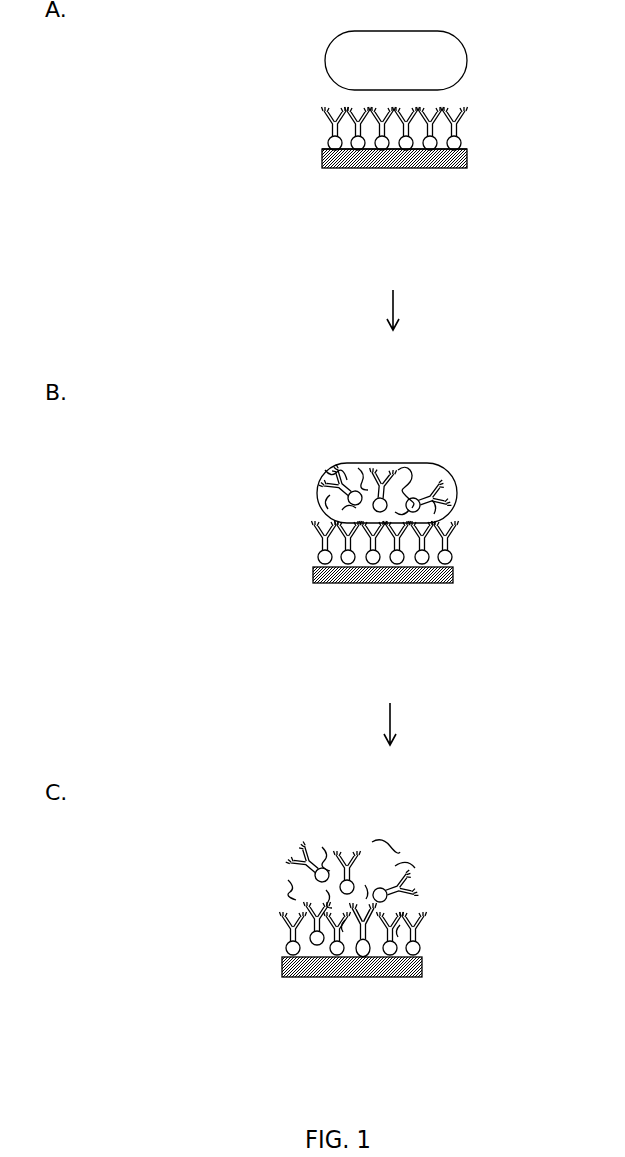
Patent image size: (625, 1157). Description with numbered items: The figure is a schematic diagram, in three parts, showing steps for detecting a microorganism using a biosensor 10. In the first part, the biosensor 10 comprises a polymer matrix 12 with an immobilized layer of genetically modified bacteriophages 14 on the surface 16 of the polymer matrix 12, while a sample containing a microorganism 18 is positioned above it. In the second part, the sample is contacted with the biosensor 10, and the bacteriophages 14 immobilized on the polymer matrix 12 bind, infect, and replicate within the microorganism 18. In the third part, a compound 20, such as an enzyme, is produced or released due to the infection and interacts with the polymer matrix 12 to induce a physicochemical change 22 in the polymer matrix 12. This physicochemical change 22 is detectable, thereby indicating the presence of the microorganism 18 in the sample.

The biosensor 10 is at (240, 131).
The polymer matrix 12 is at (397, 170).
The bacteriophages 14 is at (325, 125).
The surface 16 is at (464, 143).
The microorganism 18 is at (395, 462).
The compound 20 is at (433, 465).
The physicochemical change 22 is at (352, 980).